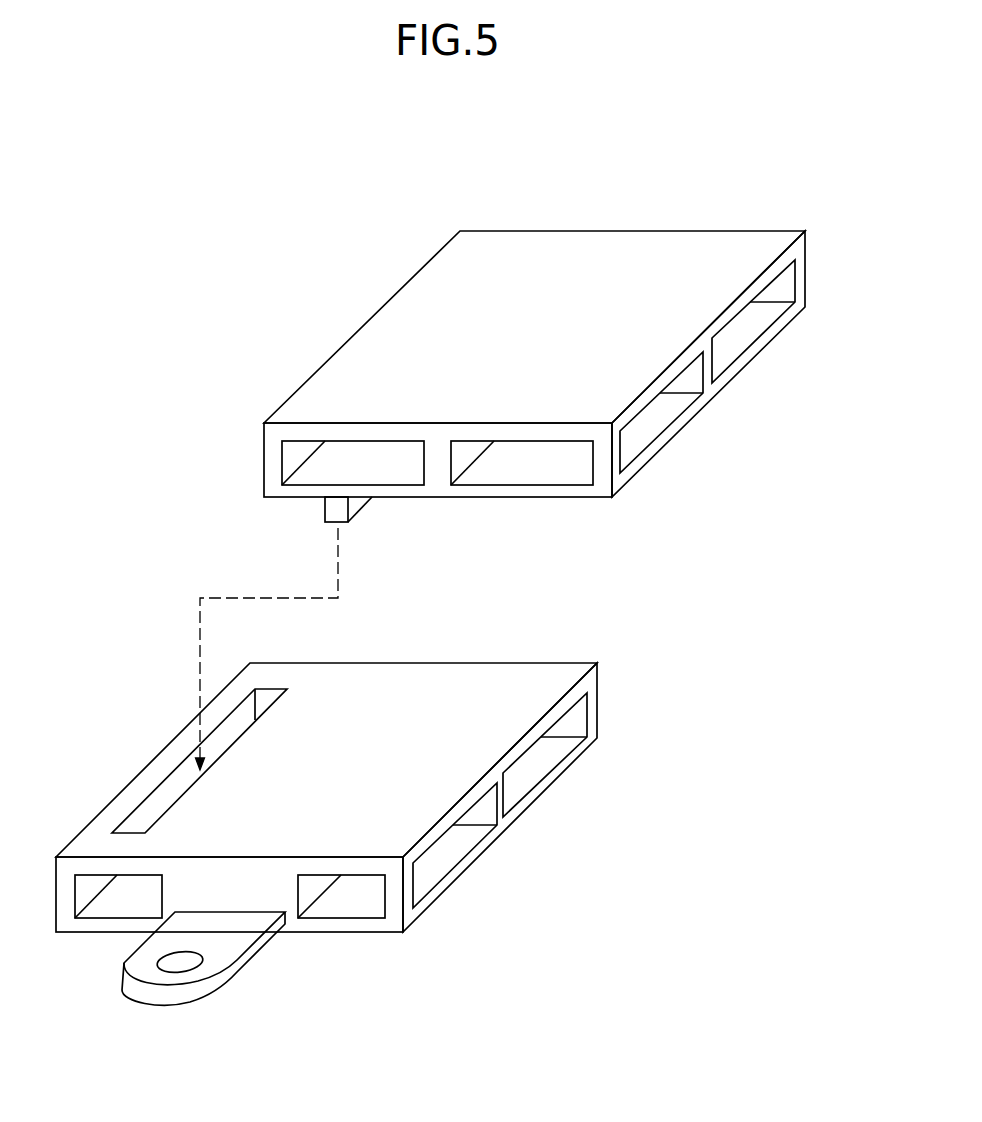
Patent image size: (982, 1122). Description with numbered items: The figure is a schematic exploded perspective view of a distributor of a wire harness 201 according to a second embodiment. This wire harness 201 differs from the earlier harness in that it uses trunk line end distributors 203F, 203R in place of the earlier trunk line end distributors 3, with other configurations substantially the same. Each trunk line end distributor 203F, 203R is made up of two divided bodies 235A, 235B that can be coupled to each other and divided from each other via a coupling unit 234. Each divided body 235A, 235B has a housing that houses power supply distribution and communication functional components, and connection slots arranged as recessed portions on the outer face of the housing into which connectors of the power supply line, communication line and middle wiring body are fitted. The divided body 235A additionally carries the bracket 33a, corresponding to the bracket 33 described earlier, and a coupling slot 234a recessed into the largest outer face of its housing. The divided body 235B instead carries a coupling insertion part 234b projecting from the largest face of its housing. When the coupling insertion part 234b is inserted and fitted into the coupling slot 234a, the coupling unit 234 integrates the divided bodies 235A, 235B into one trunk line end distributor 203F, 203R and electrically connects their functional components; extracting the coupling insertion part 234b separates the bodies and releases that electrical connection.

The wire harness 201 is at (253, 157).
The trunk line end distributor 3 is at (448, 611).
The trunk line end distributor 203F is at (250, 291).
The trunk line end distributor 203R is at (451, 611).
The divided body 235A is at (165, 735).
The divided body 235B is at (298, 383).
The coupling unit 234 is at (488, 542).
The coupling slot 234a is at (270, 690).
The coupling insertion part 234b is at (363, 507).
The bracket 33a is at (230, 945).
The bracket 33 is at (216, 986).